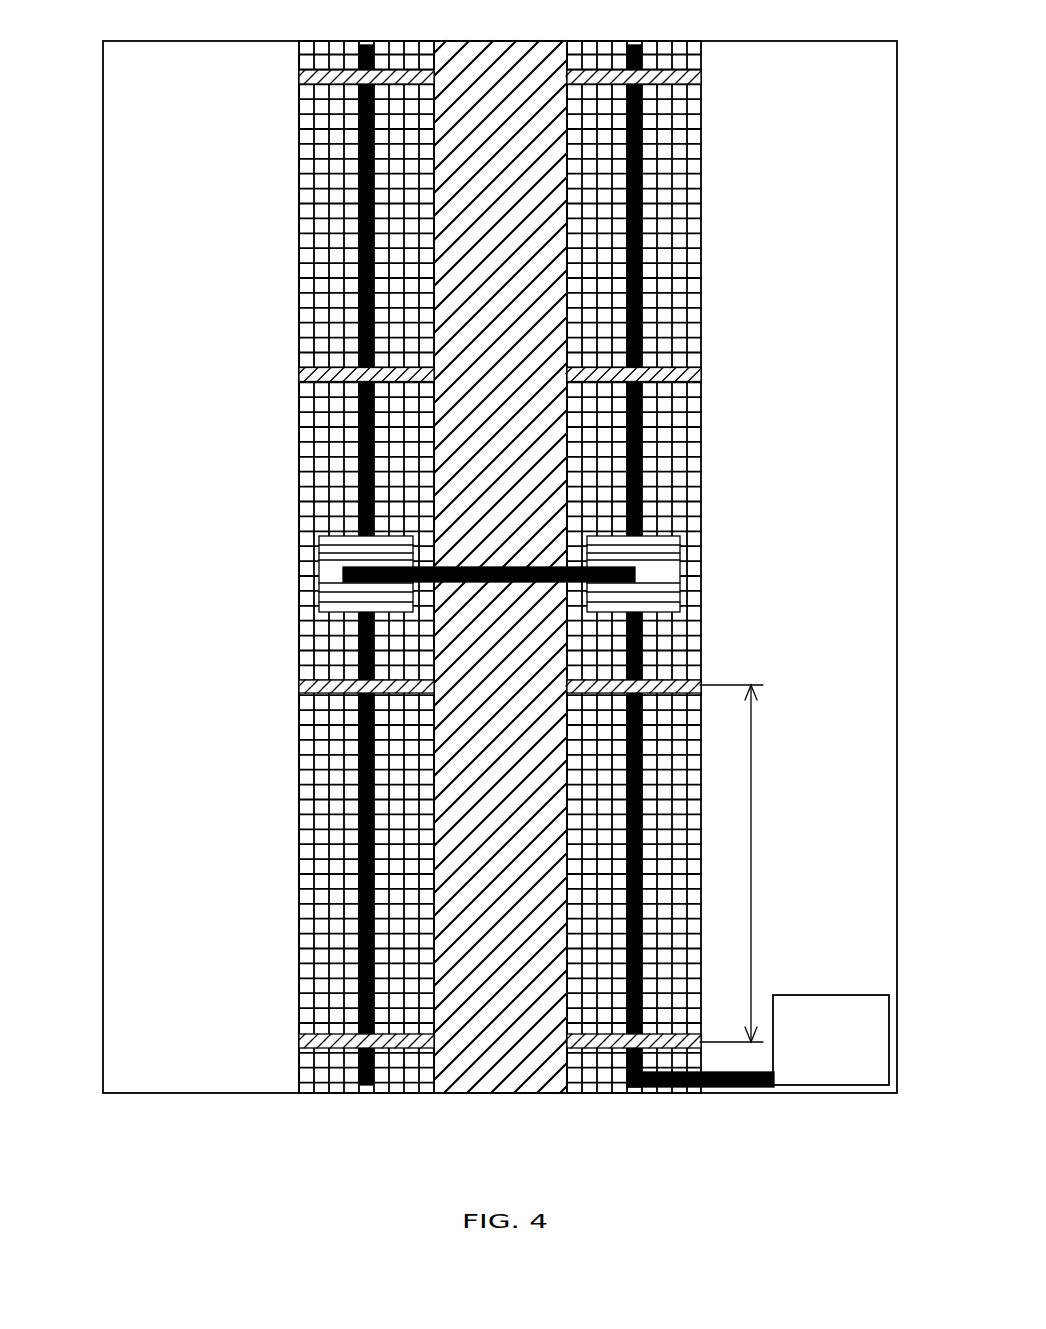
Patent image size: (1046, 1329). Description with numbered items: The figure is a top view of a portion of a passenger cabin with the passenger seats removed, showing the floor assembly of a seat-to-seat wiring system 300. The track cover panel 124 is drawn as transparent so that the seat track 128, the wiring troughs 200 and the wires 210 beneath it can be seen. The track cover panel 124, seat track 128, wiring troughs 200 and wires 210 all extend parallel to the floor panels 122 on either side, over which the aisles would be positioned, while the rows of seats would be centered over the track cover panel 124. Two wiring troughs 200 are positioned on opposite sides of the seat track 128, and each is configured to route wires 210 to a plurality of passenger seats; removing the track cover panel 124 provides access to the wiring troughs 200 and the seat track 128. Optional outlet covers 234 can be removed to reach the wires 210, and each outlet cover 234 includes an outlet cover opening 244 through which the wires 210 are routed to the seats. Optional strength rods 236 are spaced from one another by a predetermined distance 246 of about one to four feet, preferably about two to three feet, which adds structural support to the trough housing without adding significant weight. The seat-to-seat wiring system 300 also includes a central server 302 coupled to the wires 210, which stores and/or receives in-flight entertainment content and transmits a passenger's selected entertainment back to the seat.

The floor panels 122 is at (103, 55).
The track cover panel 124 is at (299, 131).
The seat track 128 is at (520, 1080).
The wiring troughs 200 is at (308, 412).
The wires 210 is at (358, 240).
The outlet covers 234 is at (663, 608).
The strength rods 236 is at (693, 376).
The outlet cover opening 244 is at (640, 568).
The predetermined distance 246 is at (751, 813).
The seat-to-seat wiring system 300 is at (808, 688).
The central server 302 is at (849, 1053).